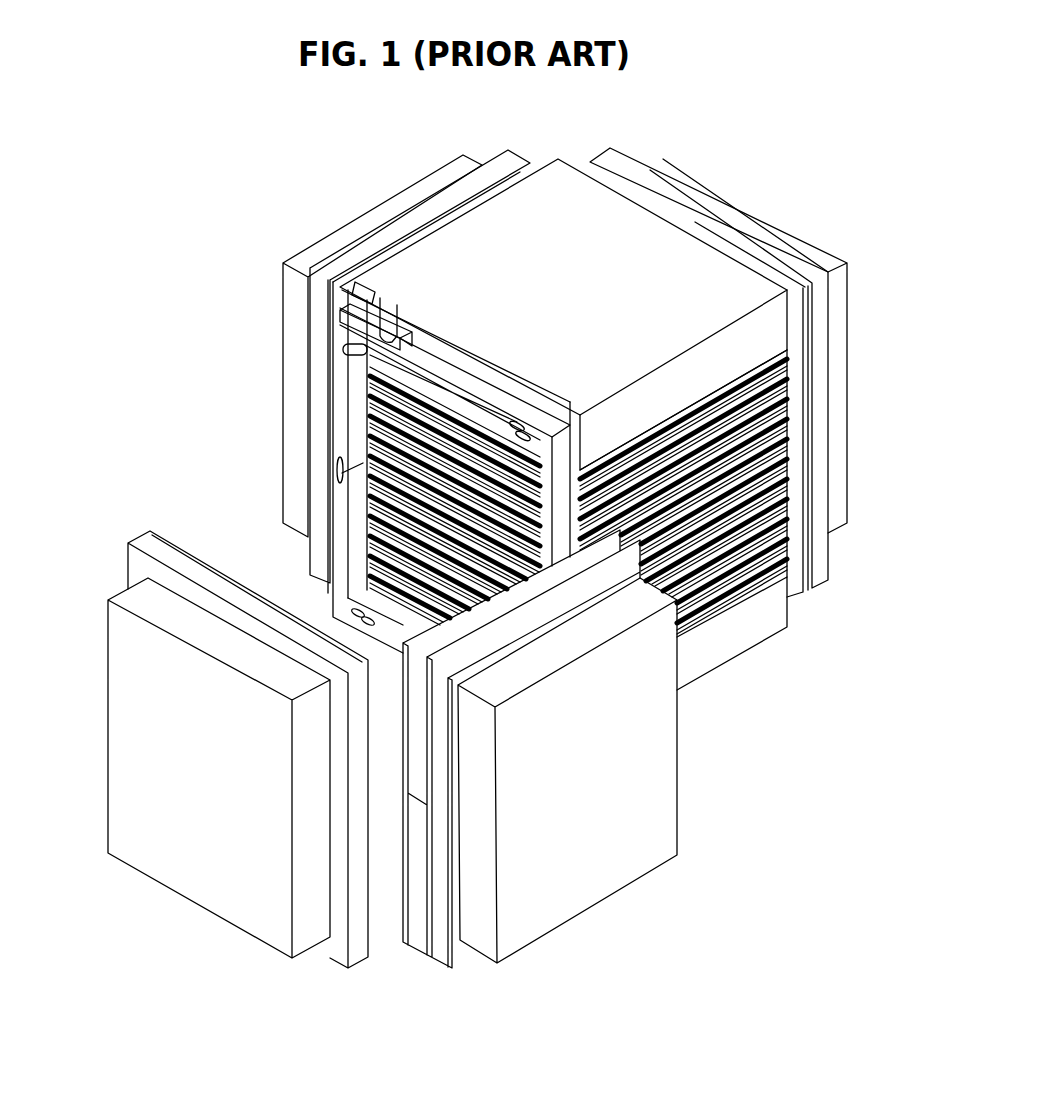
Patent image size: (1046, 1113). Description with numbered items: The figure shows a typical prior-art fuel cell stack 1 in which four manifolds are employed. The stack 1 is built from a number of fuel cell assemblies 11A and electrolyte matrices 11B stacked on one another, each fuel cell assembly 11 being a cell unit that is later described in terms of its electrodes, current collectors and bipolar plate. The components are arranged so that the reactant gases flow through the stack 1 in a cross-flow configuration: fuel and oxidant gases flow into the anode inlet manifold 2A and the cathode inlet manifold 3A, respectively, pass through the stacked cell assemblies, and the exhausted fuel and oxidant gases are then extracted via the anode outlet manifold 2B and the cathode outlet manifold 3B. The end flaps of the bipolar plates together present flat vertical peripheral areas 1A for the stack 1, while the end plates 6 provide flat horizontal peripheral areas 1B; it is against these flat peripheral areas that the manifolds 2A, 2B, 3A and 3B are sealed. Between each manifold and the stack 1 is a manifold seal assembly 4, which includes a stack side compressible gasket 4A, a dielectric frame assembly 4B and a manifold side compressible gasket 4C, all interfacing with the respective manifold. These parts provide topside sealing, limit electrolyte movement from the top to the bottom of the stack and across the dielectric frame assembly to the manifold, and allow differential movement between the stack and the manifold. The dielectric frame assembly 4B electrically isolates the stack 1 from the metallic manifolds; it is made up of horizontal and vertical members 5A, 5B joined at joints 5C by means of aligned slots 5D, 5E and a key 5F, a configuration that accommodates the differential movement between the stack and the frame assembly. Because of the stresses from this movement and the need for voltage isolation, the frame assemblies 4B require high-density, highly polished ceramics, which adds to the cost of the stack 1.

The fuel cell stack 1 is at (788, 214).
The flat vertical peripheral areas 1A is at (780, 517).
The flat horizontal peripheral areas 1B is at (753, 342).
The anode inlet manifold 2A is at (667, 711).
The anode outlet manifold 2B is at (294, 310).
The cathode inlet manifold 3A is at (123, 724).
The cathode outlet manifold 3B is at (717, 207).
The manifold seal assembly 4 is at (343, 523).
The stack side compressible gasket 4A is at (460, 360).
The dielectric frame assembly 4B is at (355, 412).
The manifold side compressible gasket 4C is at (170, 543).
The horizontal member 5A is at (485, 397).
The vertical member 5B is at (557, 455).
The joint 5C is at (390, 335).
The slot 5D is at (375, 297).
The slot 5E is at (398, 345).
The key 5F is at (340, 350).
The end plate 6 is at (592, 210).
The fuel cell assembly 11 is at (774, 412).
The fuel cell assembly 11A is at (790, 378).
The electrolyte matrix 11B is at (793, 415).